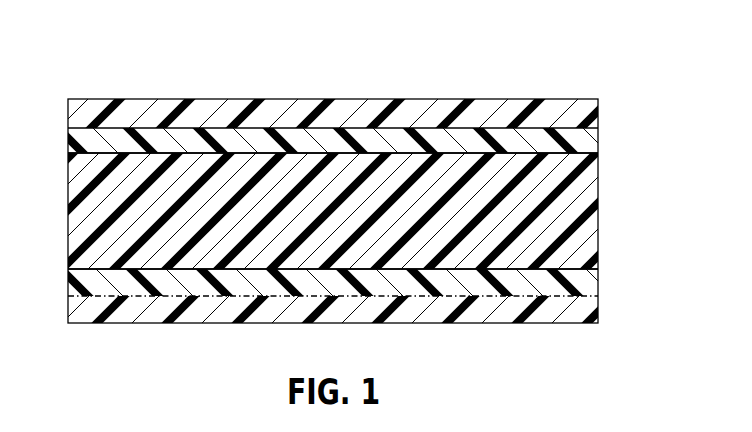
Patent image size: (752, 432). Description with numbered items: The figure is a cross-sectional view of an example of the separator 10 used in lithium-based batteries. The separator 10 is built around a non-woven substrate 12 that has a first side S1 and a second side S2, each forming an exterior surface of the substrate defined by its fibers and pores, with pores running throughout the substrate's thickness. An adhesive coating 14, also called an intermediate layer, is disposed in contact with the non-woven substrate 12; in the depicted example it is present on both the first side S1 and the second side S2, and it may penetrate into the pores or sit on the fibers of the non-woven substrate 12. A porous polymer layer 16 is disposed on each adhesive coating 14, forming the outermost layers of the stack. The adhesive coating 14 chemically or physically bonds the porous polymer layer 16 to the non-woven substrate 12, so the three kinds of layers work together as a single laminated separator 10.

The separator 10 is at (529, 58).
The non-woven substrate 12 is at (586, 218).
The adhesive coating 14 is at (586, 142).
The porous polymer layer 16 is at (586, 113).
The first side S1 is at (138, 153).
The second side S2 is at (135, 278).